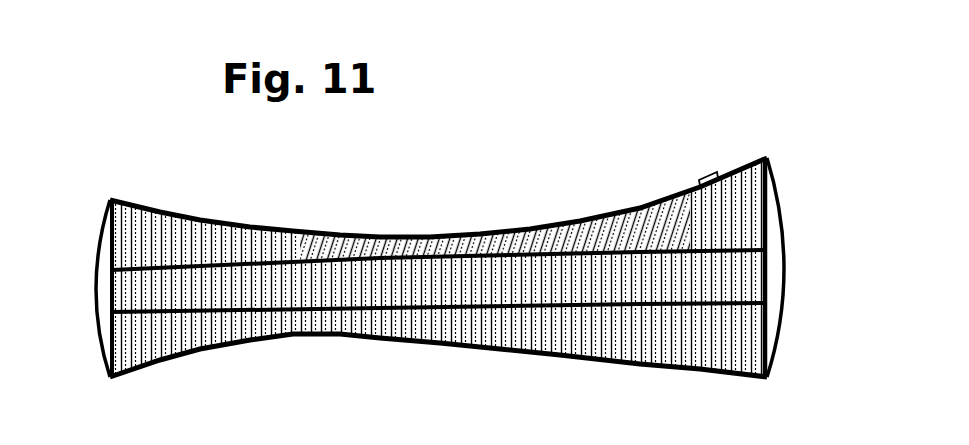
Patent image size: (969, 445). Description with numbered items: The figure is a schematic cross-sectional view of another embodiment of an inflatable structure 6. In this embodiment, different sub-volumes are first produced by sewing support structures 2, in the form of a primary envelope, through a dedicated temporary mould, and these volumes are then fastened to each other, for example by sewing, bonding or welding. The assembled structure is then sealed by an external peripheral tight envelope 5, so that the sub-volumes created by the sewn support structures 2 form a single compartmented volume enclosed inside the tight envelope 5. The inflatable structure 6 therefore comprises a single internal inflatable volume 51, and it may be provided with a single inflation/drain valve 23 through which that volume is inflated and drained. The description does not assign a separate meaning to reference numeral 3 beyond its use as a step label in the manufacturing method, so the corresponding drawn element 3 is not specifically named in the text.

The support structure 2 is at (108, 247).
The gaps between slats 3 is at (352, 330).
The external peripheral tight envelope 5 is at (781, 219).
The internal inflatable volume 51 is at (745, 277).
The inflatable structure 6 is at (308, 218).
The inflation/drain valve 23 is at (692, 170).